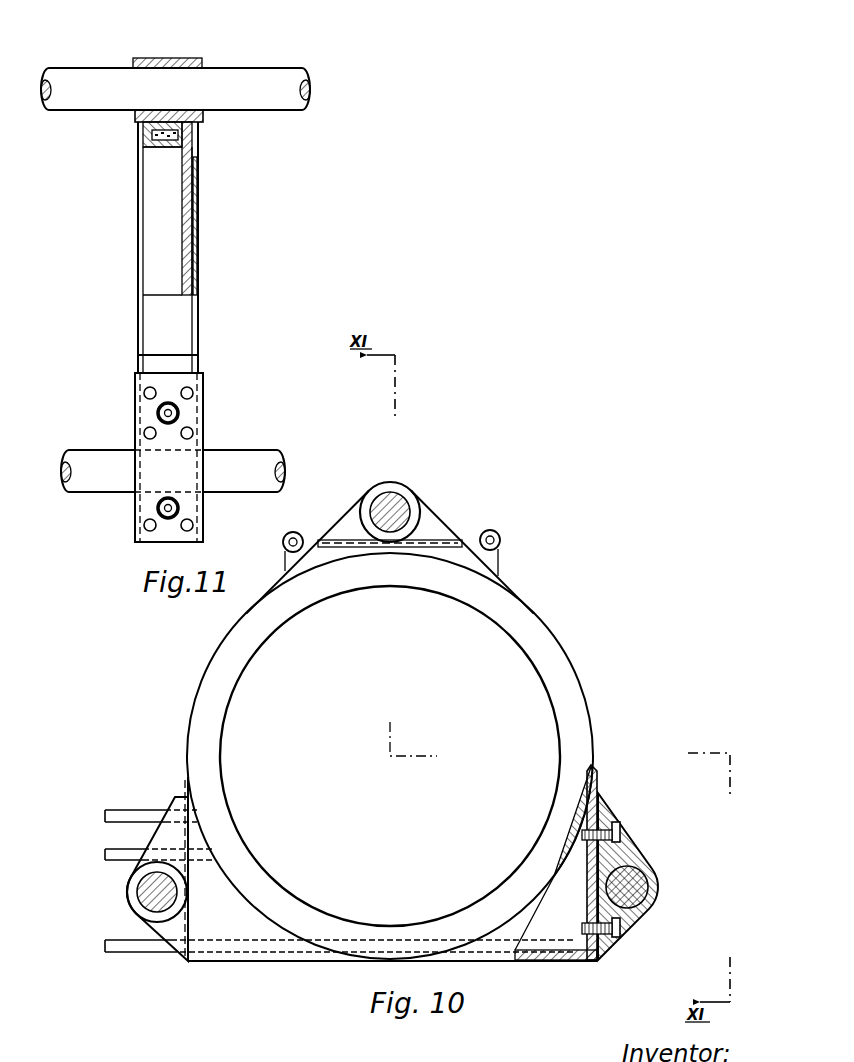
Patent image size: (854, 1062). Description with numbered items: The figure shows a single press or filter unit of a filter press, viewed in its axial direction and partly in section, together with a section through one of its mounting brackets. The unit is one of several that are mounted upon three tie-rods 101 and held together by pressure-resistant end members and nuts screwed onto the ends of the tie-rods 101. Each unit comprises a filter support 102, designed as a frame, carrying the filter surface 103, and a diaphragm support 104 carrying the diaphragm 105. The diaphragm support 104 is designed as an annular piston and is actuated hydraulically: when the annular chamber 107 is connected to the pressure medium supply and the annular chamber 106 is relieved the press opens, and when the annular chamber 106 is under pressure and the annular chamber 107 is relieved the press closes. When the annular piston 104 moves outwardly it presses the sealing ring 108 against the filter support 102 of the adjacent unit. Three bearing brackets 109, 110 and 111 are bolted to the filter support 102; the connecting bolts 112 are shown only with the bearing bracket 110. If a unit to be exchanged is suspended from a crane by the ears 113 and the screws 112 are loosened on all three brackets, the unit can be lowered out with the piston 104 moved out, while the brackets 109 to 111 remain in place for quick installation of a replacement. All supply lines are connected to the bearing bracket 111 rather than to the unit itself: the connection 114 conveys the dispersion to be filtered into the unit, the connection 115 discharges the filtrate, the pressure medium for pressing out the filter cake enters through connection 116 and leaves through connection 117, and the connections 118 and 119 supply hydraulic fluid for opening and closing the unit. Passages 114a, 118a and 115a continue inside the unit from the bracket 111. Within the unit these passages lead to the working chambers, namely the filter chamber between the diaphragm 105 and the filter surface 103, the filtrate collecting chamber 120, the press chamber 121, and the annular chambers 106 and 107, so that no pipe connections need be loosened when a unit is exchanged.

In FIG. 11, the tie-rod 101 is at (280, 75).
In FIG. 10, the tie-rod 101 is at (388, 495).
In FIG. 11, the filter support 102 is at (198, 138).
In FIG. 10, the filter support 102 is at (532, 625).
In FIG. 11, the filter surface 103 is at (198, 202).
In FIG. 10, the filter surface 103 is at (530, 700).
In FIG. 11, the diaphragm support 104 is at (140, 150).
In FIG. 11, the diaphragm 105 is at (138, 230).
In FIG. 11, the annular chamber 106 is at (180, 123).
In FIG. 11, the annular chamber 107 is at (152, 123).
In FIG. 11, the sealing ring 108 is at (140, 133).
In FIG. 11, the bearing bracket 109 is at (158, 58).
In FIG. 10, the bearing bracket 109 is at (432, 520).
In FIG. 10, the bearing bracket 110 is at (630, 855).
In FIG. 11, the bearing bracket 111 is at (182, 485).
In FIG. 10, the bearing bracket 111 is at (170, 800).
In FIG. 11, the connecting bolt 112 is at (160, 412).
In FIG. 10, the connecting bolt 112 is at (620, 828).
In FIG. 10, the ear 113 is at (297, 535).
In FIG. 11, the connection 114 is at (188, 393).
In FIG. 10, the connection 114 is at (105, 815).
In FIG. 10, the hidden rod portion 114a is at (197, 813).
In FIG. 11, the connection 115 is at (190, 525).
In FIG. 10, the connection 115 is at (105, 945).
In FIG. 10, the hidden rod portion 115a is at (273, 945).
In FIG. 11, the connection 116 is at (147, 392).
In FIG. 11, the connection 117 is at (145, 525).
In FIG. 11, the connection 118 is at (190, 432).
In FIG. 10, the connection 118 is at (105, 853).
In FIG. 10, the hidden rod portion 118a is at (202, 855).
In FIG. 11, the connection 119 is at (145, 432).
In FIG. 11, the filtrate collecting chamber 120 is at (193, 263).
In FIG. 11, the press chamber 121 is at (155, 285).